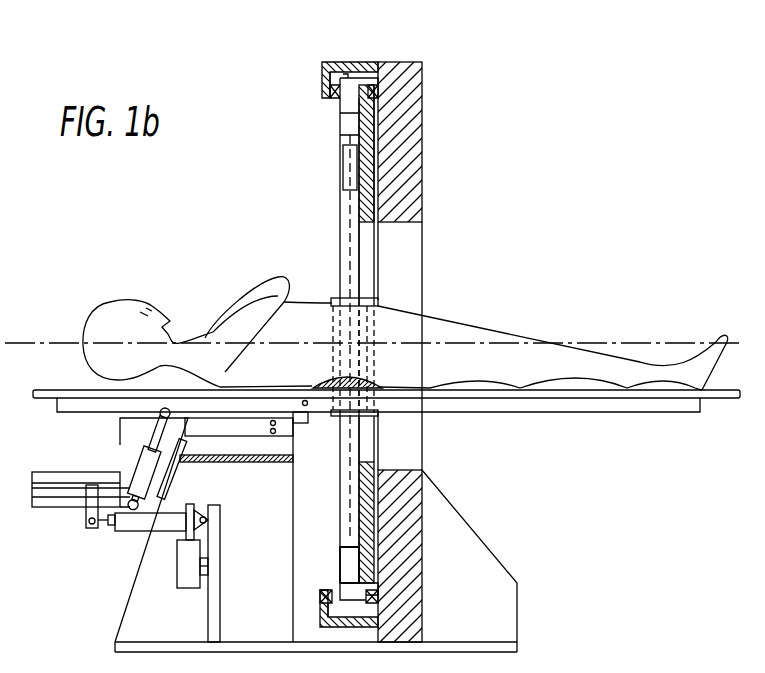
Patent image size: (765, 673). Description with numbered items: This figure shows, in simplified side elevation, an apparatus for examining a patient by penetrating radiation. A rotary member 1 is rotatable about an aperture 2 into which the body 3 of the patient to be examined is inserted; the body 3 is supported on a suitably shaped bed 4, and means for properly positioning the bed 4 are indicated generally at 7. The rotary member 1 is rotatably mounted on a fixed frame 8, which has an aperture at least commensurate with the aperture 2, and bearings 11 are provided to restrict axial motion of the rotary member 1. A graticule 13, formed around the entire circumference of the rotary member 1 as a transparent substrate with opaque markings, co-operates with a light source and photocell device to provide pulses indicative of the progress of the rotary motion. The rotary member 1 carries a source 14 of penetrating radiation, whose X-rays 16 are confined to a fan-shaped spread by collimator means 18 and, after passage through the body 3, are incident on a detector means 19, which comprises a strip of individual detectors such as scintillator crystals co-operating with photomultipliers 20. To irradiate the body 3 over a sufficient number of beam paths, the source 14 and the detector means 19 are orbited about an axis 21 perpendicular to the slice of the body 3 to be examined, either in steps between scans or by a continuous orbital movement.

The rotary member 1 is at (362, 482).
The aperture 2 is at (368, 258).
The body 3 is at (246, 292).
The bed 4 is at (724, 405).
The means for positioning bed 7 is at (113, 534).
The fixed frame 8 is at (424, 130).
The bearings 11 is at (330, 92).
The graticule 13 is at (349, 78).
The source of penetrating radiation 14 is at (340, 124).
The X-rays 16 is at (345, 212).
The collimator means 18 is at (345, 165).
The detector means 19 is at (349, 565).
The photomultipliers 20 is at (338, 567).
The axis 21 is at (28, 340).